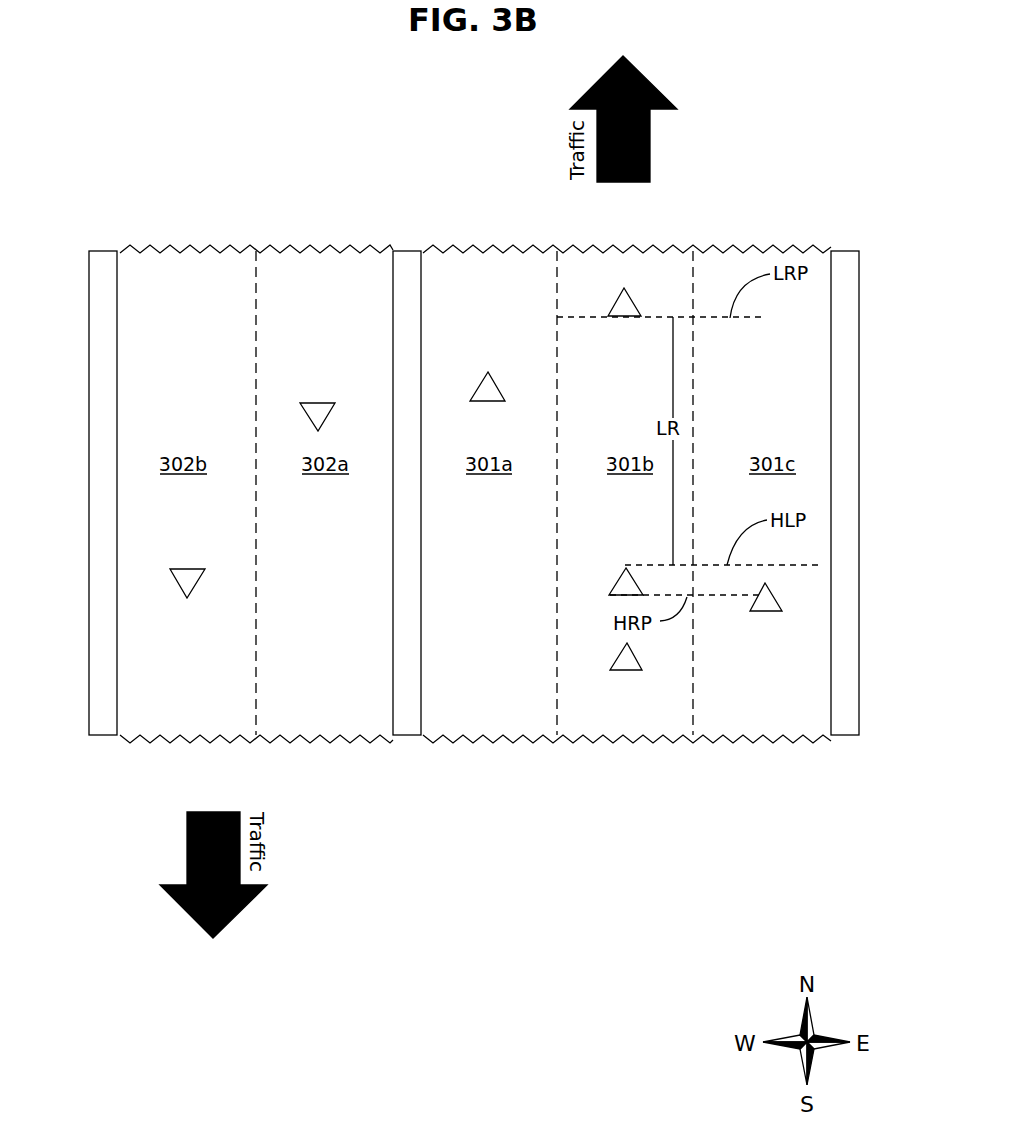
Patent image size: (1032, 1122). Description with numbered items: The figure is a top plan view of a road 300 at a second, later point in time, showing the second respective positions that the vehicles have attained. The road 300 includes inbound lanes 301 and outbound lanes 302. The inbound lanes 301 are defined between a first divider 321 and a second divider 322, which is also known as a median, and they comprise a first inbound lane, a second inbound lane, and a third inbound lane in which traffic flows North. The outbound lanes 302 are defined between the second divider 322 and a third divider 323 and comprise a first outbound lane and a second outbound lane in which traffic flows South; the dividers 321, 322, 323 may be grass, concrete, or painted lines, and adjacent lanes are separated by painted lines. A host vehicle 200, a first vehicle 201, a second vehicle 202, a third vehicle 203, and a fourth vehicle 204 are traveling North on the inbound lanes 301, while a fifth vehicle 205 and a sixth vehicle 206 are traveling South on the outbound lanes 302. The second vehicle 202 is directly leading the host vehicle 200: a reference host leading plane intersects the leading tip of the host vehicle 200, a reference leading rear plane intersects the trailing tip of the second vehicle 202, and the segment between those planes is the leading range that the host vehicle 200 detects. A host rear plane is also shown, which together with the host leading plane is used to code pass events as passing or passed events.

The host vehicle 200 is at (624, 588).
The first vehicle 201 is at (490, 393).
The second vehicle 202 is at (625, 310).
The third vehicle 203 is at (767, 602).
The fourth vehicle 204 is at (622, 655).
The fifth vehicle 205 is at (188, 578).
The sixth vehicle 206 is at (318, 418).
The road 300 is at (814, 113).
The inbound lanes 301 is at (643, 224).
The outbound lanes 302 is at (262, 224).
The first divider 321 is at (845, 725).
The second divider 322 is at (406, 725).
The third divider 323 is at (103, 725).